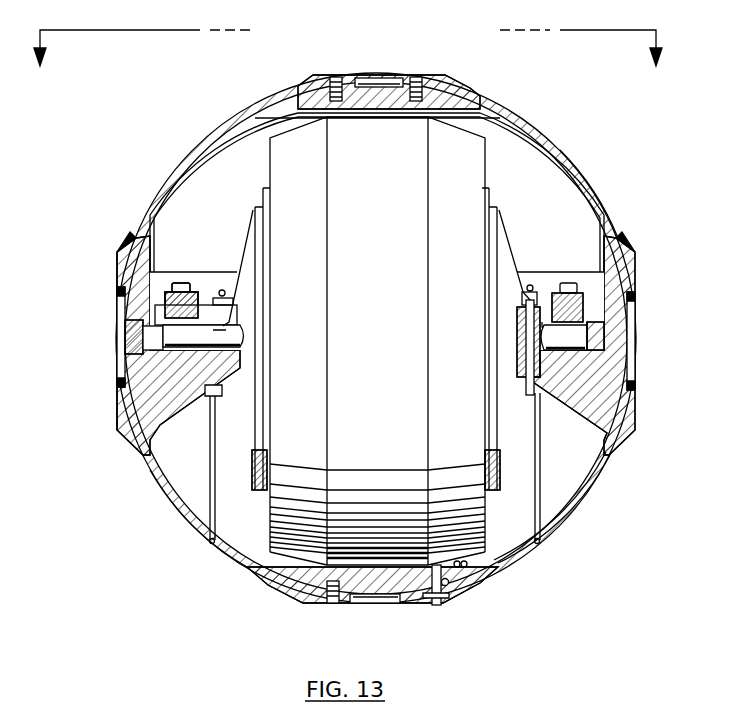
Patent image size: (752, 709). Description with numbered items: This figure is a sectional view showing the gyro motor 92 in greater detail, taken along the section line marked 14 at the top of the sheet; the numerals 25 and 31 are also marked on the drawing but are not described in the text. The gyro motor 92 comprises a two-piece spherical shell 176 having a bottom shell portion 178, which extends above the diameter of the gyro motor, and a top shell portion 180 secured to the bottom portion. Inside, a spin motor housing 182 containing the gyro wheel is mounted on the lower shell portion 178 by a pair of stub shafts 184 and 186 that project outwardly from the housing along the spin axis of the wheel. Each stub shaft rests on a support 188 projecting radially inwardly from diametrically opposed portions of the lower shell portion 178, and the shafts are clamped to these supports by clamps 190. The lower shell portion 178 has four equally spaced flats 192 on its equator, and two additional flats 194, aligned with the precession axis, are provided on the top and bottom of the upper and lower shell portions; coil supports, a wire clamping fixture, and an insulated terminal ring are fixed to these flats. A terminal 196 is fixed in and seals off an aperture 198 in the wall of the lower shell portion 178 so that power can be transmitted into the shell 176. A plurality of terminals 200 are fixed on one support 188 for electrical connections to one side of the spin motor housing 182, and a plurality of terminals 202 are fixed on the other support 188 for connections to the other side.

The section line 14- 14 is at (348, 61).
The housing ring 25 is at (122, 256).
The seal block 31 is at (148, 342).
The gyro motor 92 is at (549, 130).
The spherical shell 176 is at (598, 185).
The bottom shell portion 178 is at (172, 525).
The top shell portion 180 is at (172, 176).
The spin motor housing 182 is at (385, 207).
The stub shaft 184 is at (188, 342).
The stub shaft 186 is at (580, 350).
The support 188 is at (240, 366).
The clamp 190 is at (176, 292).
The flat 192 is at (117, 354).
The flat 194 is at (393, 77).
The terminal 196 is at (434, 600).
The aperture 198 is at (447, 585).
The terminal 200 is at (521, 392).
The terminal 202 is at (223, 398).